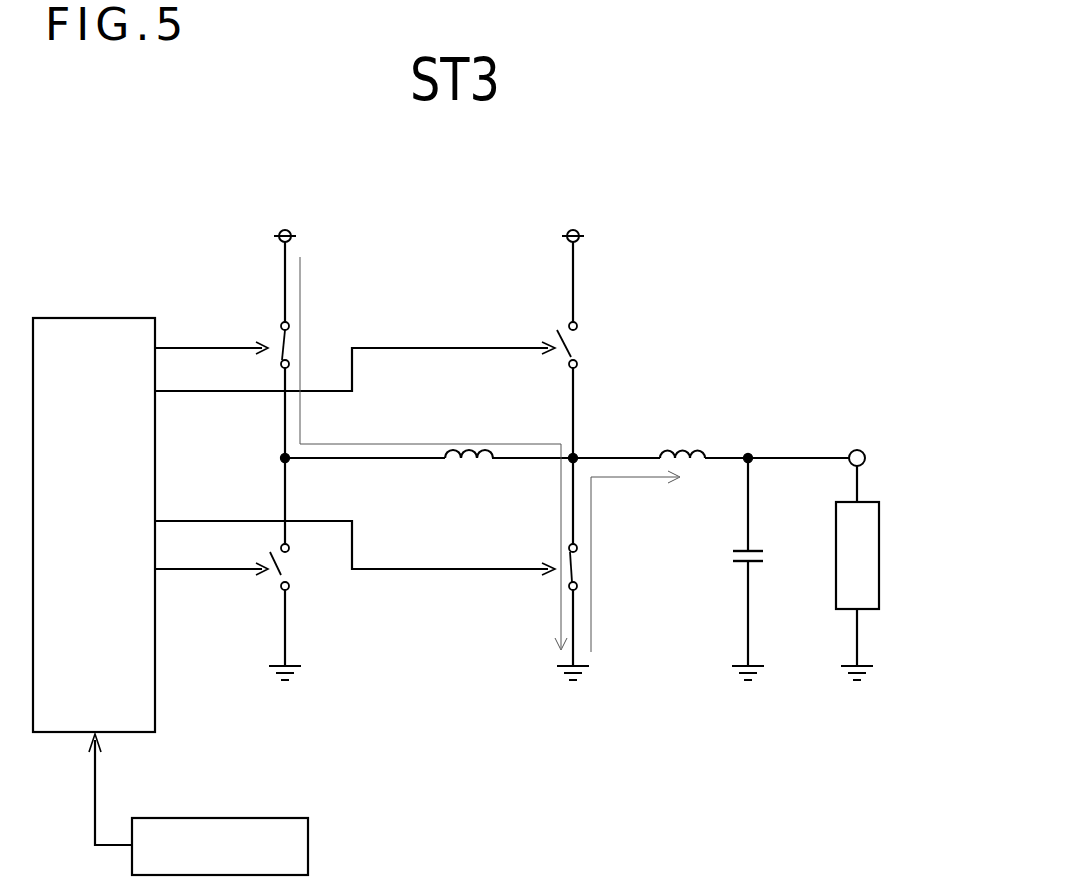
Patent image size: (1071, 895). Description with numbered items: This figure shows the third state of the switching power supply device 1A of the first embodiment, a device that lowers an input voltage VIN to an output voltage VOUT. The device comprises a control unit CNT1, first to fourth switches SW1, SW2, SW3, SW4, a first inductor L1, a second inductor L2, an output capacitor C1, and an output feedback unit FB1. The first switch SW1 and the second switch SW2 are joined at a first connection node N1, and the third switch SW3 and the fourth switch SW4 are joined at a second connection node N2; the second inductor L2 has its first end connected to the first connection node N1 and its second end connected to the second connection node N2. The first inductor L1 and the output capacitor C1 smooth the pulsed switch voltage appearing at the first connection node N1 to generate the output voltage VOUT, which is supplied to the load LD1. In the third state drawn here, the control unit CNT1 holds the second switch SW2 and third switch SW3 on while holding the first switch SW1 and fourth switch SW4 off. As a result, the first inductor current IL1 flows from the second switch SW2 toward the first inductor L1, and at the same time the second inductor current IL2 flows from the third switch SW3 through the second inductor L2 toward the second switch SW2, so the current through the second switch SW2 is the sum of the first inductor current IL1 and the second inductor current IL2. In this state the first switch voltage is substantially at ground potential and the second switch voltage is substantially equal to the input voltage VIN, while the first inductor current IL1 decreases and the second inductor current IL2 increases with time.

The switching power supply device 1A is at (272, 154).
The control unit CNT1 is at (92, 318).
The first switch SW1 is at (557, 319).
The second switch SW2 is at (557, 580).
The third switch SW3 is at (270, 319).
The fourth switch SW4 is at (274, 580).
The first inductor L1 is at (677, 448).
The second inductor L2 is at (474, 478).
The output capacitor C1 is at (766, 556).
The load LD1 is at (880, 556).
The output feedback unit FB1 is at (310, 853).
The first connection node N1 is at (580, 450).
The second connection node N2 is at (276, 466).
The input voltage VIN is at (429, 260).
The output voltage VOUT is at (816, 443).
The first inductor current IL1 is at (635, 561).
The second inductor current IL2 is at (433, 453).